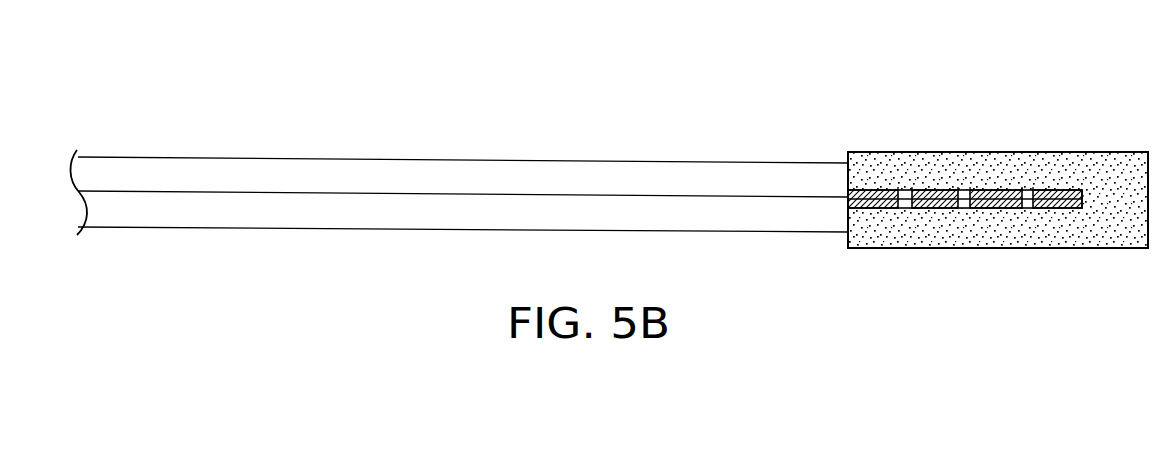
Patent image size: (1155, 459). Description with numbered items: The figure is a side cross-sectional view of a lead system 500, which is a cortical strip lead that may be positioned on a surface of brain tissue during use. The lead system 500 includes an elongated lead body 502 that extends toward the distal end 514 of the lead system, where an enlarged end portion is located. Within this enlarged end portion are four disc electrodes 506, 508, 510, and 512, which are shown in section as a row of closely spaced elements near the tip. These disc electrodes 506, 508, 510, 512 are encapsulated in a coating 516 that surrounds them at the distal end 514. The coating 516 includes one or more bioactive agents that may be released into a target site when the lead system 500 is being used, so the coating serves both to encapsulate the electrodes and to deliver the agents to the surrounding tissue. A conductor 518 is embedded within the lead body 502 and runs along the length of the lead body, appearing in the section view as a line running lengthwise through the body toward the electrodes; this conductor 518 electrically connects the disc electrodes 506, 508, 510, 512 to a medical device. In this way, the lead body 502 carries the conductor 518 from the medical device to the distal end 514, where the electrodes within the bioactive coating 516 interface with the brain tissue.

The lead system 500 is at (609, 176).
The lead body 502 is at (459, 203).
The disc electrode 506 is at (869, 204).
The disc electrode 508 is at (934, 204).
The disc electrode 510 is at (997, 204).
The disc electrode 512 is at (1064, 204).
The distal end 514 is at (998, 176).
The coating 516 is at (1058, 166).
The conductor 518 is at (400, 193).